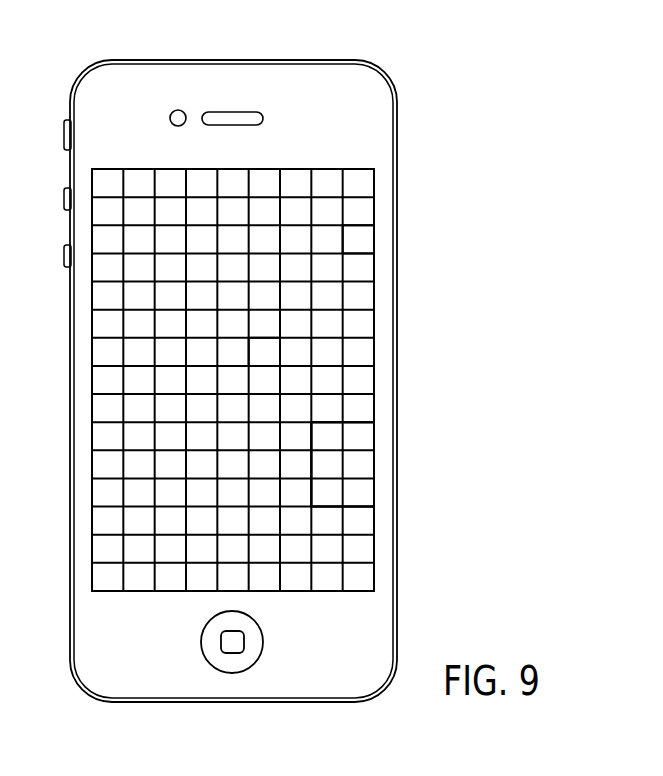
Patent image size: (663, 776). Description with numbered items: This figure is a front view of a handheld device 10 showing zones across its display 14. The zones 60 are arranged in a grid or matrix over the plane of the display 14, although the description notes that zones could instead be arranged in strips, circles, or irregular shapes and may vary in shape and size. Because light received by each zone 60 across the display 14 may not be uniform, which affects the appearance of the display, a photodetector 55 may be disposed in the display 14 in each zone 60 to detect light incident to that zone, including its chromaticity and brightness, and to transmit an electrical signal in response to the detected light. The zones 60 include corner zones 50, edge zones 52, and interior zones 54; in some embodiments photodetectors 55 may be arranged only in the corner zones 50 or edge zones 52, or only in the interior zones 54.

The electronic device 10 is at (378, 44).
The display 14 is at (378, 355).
The corner zones 50 is at (363, 188).
The edge zones 52 is at (360, 240).
The interior zones 54 is at (267, 357).
The photodetector 55 is at (363, 498).
The zones 60 is at (342, 464).